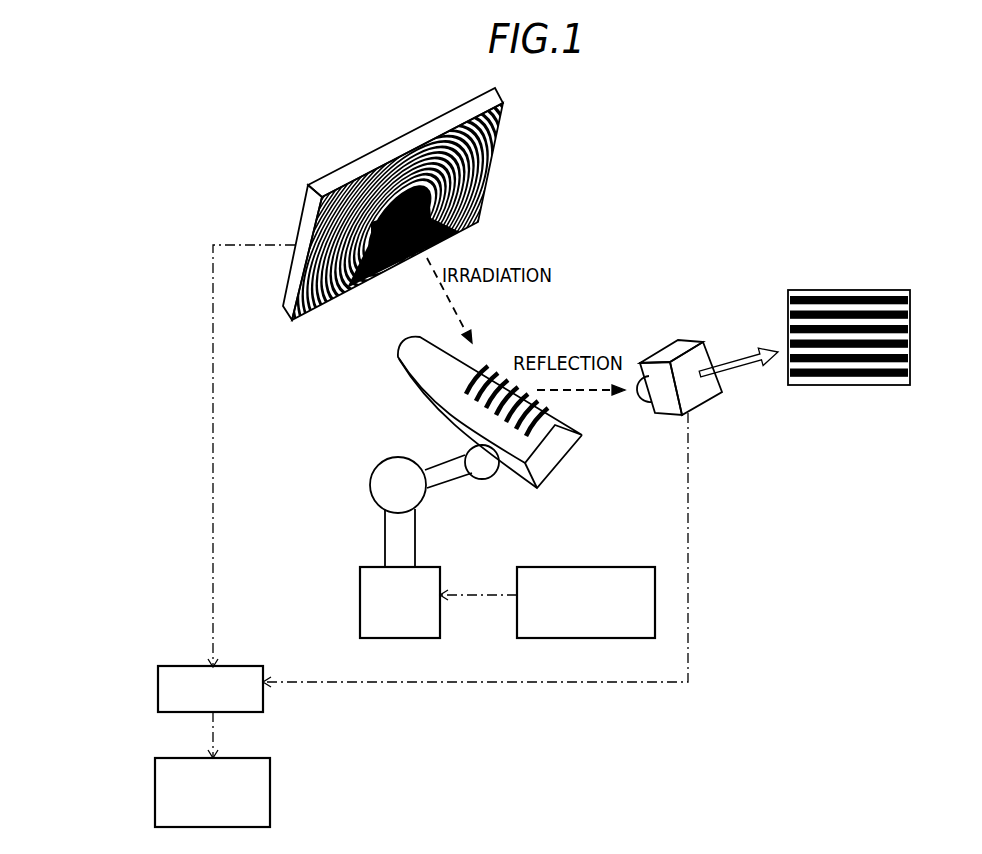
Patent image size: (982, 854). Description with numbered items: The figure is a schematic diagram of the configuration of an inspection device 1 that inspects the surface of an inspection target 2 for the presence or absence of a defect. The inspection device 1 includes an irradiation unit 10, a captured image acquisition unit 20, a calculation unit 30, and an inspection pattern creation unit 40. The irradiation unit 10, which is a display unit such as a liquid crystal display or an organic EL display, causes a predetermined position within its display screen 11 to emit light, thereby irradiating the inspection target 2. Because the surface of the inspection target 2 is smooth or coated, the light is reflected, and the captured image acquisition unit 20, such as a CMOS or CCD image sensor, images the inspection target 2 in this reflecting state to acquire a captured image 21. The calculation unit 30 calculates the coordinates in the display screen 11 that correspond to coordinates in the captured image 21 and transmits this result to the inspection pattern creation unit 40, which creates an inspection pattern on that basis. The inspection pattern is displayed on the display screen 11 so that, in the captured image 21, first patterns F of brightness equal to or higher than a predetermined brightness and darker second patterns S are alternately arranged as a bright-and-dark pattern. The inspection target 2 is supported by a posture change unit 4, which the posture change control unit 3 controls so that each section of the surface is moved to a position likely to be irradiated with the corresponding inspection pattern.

The inspection device 1 is at (678, 198).
The irradiation unit 10 is at (400, 221).
The display screen 11 is at (395, 140).
The inspection target 2 is at (431, 402).
The posture change control unit 3 is at (583, 566).
The posture change unit 4 is at (393, 541).
The captured image acquisition unit 20 is at (703, 358).
The captured image 21 is at (857, 290).
The calculation unit 30 is at (158, 683).
The inspection pattern creation unit 40 is at (155, 782).
The second pattern S is at (788, 334).
The first pattern F is at (910, 357).